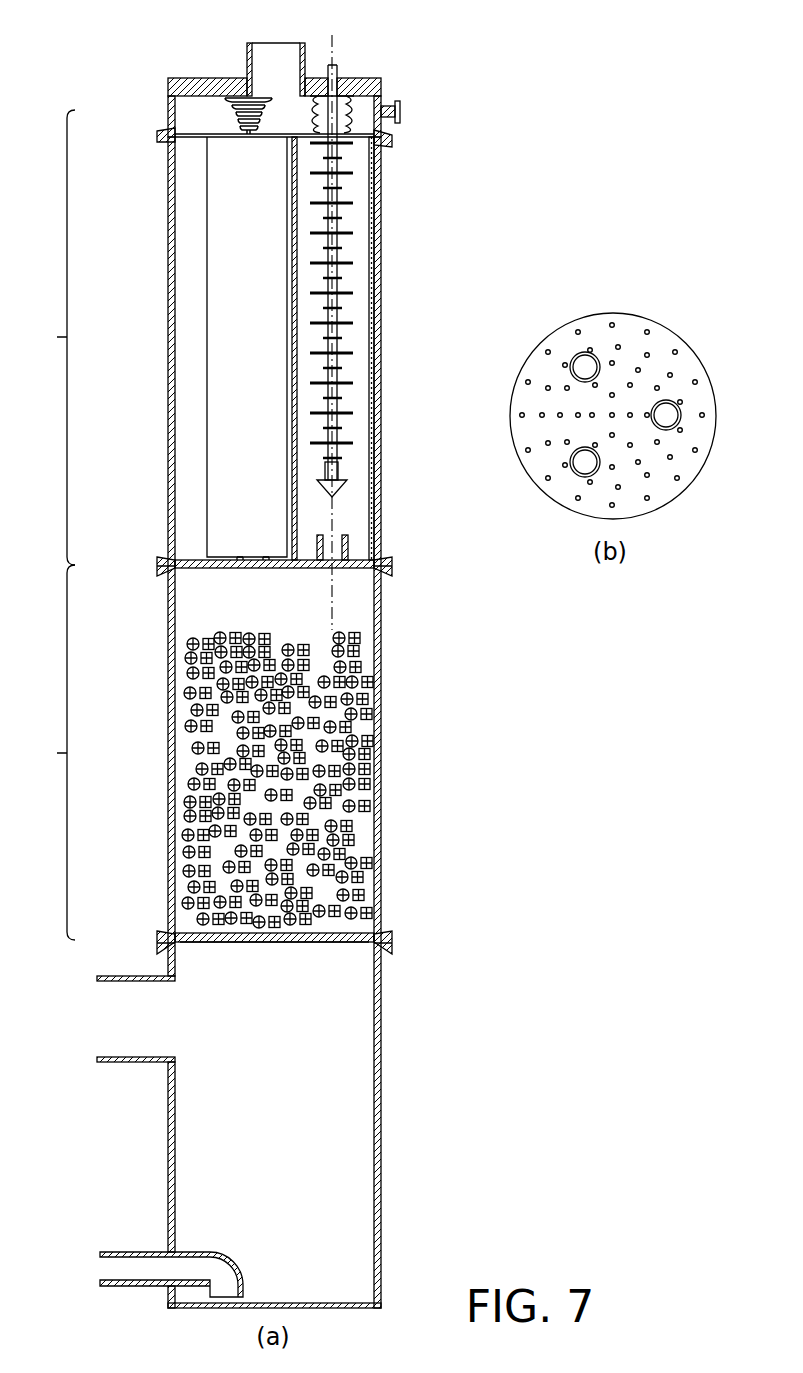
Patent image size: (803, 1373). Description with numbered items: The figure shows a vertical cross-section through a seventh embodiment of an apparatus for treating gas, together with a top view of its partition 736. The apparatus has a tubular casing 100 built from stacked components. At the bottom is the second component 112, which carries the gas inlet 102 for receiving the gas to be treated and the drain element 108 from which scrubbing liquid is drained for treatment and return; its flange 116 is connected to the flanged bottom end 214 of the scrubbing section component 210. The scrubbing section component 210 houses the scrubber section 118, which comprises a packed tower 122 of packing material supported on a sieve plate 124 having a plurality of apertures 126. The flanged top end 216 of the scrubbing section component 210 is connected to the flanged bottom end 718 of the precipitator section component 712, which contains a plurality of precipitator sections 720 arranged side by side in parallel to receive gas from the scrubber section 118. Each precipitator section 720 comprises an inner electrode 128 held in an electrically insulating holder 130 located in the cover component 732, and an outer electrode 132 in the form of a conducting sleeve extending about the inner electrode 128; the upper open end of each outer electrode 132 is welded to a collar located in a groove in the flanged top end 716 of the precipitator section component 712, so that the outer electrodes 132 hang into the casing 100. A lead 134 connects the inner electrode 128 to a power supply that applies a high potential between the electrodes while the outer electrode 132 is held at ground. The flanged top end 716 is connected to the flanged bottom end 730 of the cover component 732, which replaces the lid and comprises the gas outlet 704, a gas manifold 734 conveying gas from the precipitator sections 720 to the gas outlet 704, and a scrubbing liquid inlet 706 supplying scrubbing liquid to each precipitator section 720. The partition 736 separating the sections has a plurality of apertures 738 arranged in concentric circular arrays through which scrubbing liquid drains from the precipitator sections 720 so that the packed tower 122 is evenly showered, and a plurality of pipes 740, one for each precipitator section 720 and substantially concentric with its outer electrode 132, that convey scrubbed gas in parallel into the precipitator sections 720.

The casing 100 is at (314, 722).
The gas inlet 102 is at (123, 1063).
The drain element 108 is at (130, 1252).
The second component 112 is at (382, 1073).
The flange 116 is at (392, 952).
The scrubber section 118 is at (44, 752).
The packed tower 122 is at (362, 755).
The sieve plate 124 is at (258, 945).
The apertures 126 is at (345, 945).
The inner electrode 128 is at (338, 246).
The holder 130 is at (350, 100).
The outer electrode 132 is at (297, 508).
The lead 134 is at (330, 44).
The scrubbing section component 210 is at (175, 716).
The flanged bottom end 214 is at (392, 933).
The flanged top end 216 is at (390, 572).
The gas outlet 704 is at (246, 56).
The scrubbing liquid inlet 706 is at (401, 112).
The precipitator section component 712 is at (168, 237).
The flanged top end 716 is at (388, 148).
The flanged bottom end 718 is at (392, 560).
The precipitator sections 720 is at (44, 337).
The flanged bottom end 730 is at (166, 129).
The cover component 732 is at (176, 78).
The gas manifold 734 is at (192, 124).
The partition 736 is at (290, 570).
The apertures 738 is at (240, 569).
The pipes 740 is at (682, 415).